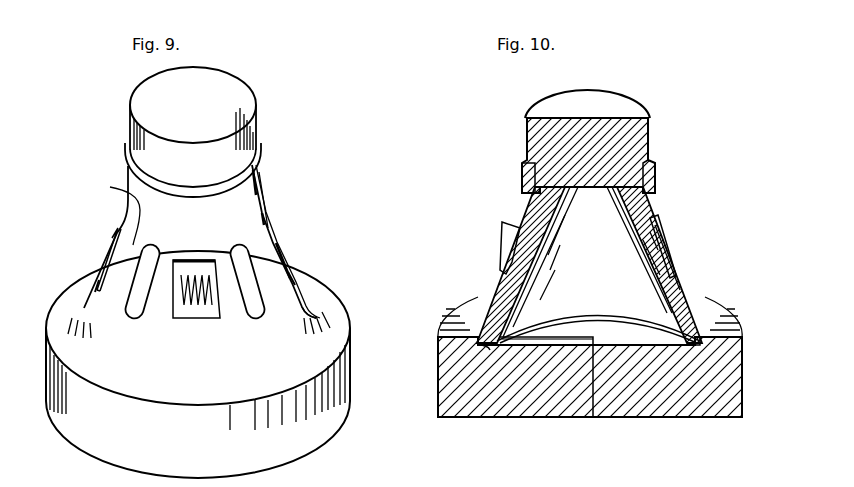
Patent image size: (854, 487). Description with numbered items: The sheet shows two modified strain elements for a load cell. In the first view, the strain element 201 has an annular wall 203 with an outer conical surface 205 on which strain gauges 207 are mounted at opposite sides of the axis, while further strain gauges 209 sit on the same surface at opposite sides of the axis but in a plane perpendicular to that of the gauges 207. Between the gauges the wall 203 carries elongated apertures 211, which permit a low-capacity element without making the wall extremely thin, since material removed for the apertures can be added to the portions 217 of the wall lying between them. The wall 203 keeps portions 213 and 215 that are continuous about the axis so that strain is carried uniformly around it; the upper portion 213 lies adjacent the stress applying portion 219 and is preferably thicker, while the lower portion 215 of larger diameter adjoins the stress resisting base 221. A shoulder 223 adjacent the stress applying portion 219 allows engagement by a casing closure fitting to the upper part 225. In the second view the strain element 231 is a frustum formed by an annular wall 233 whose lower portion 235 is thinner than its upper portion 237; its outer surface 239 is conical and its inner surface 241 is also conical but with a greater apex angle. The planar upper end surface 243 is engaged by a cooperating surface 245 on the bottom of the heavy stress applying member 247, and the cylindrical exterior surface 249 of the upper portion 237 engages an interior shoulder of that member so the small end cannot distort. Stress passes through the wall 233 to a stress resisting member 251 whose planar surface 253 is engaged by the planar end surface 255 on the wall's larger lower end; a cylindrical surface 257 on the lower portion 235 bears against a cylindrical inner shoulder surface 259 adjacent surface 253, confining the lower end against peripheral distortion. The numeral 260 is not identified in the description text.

In FIG. 9, the strain element 201 is at (273, 216).
In FIG. 9, the annular wall 203 is at (298, 290).
In FIG. 9, the outer conical surface 205 is at (110, 209).
In FIG. 9, the strain gauges 207 is at (195, 310).
In FIG. 9, the strain gauges 209 is at (104, 240).
In FIG. 9, the elongated apertures 211 is at (235, 250).
In FIG. 9, the portion 213 is at (253, 211).
In FIG. 9, the portion 215 is at (303, 307).
In FIG. 9, the portions 217 is at (163, 280).
In FIG. 9, the stress applying portion 219 is at (262, 172).
In FIG. 9, the stress resisting base 221 is at (330, 327).
In FIG. 9, the shoulder 223 is at (258, 143).
In FIG. 9, the upper part 225 is at (140, 133).
In FIG. 10, the strain element 231 is at (664, 213).
In FIG. 10, the annular wall 233 is at (672, 277).
In FIG. 10, the lower portion 235 is at (688, 300).
In FIG. 10, the upper portion 237 is at (653, 205).
In FIG. 10, the outer surface 239 is at (530, 210).
In FIG. 10, the inner surface 241 is at (640, 245).
In FIG. 10, the upper end surface 243 is at (535, 185).
In FIG. 10, the cooperating surface 245 is at (595, 190).
In FIG. 10, the stress applying member 247 is at (643, 130).
In FIG. 10, the exterior surface 249 is at (647, 193).
In FIG. 10, the stress resisting member 251 is at (530, 418).
In FIG. 10, the surface 253 is at (593, 418).
In FIG. 10, the planar end surface 255 is at (480, 352).
In FIG. 10, the surface 257 is at (712, 332).
In FIG. 10, the cylindrical inner shoulder surface 259 is at (735, 348).
In FIG. 10, the clip strips 260 is at (508, 248).